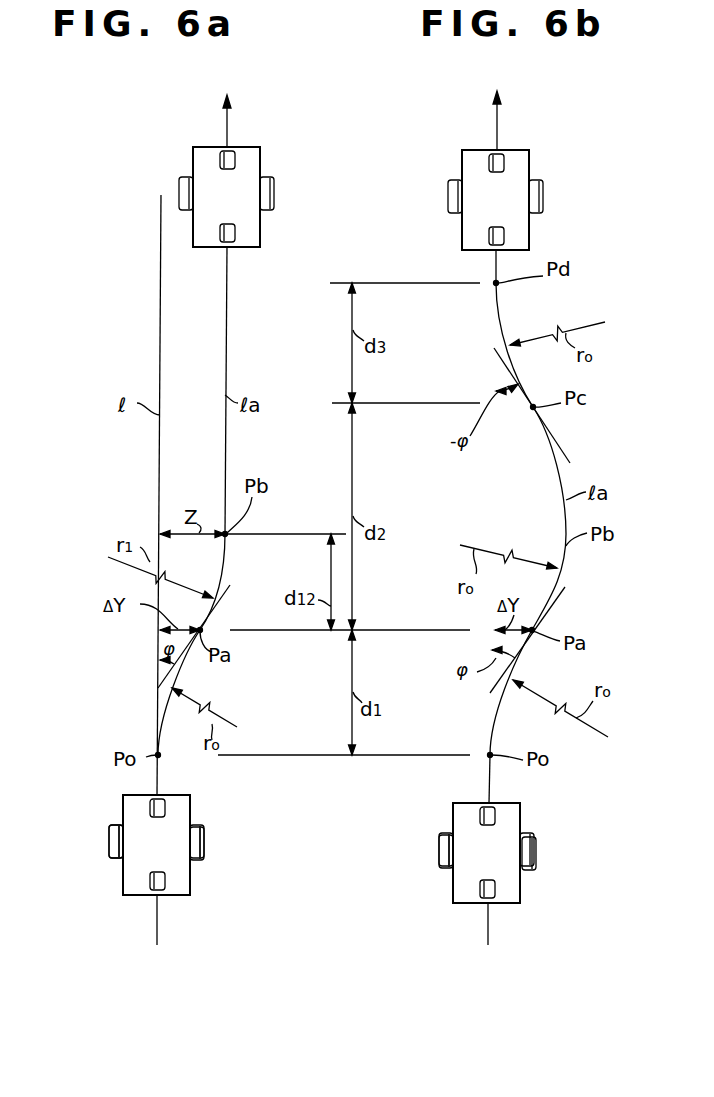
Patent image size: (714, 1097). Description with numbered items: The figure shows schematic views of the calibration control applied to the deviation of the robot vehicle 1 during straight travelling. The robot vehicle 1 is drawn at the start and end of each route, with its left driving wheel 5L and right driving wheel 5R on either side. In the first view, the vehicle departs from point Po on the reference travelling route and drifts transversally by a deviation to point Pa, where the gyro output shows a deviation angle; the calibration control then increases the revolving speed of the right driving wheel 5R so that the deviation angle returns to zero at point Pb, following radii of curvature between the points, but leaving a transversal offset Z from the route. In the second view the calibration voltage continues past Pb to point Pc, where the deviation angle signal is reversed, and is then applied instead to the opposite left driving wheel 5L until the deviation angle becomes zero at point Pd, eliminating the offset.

In FIG. 6A, the robot vehicle 1 is at (198, 158).
In FIG. 6B, the robot vehicle 1 is at (522, 168).
In FIG. 6A, the left driving wheel 5L is at (110, 844).
In FIG. 6B, the left driving wheel 5L is at (445, 856).
In FIG. 6A, the right driving wheel 5R is at (204, 847).
In FIG. 6B, the right driving wheel 5R is at (536, 856).